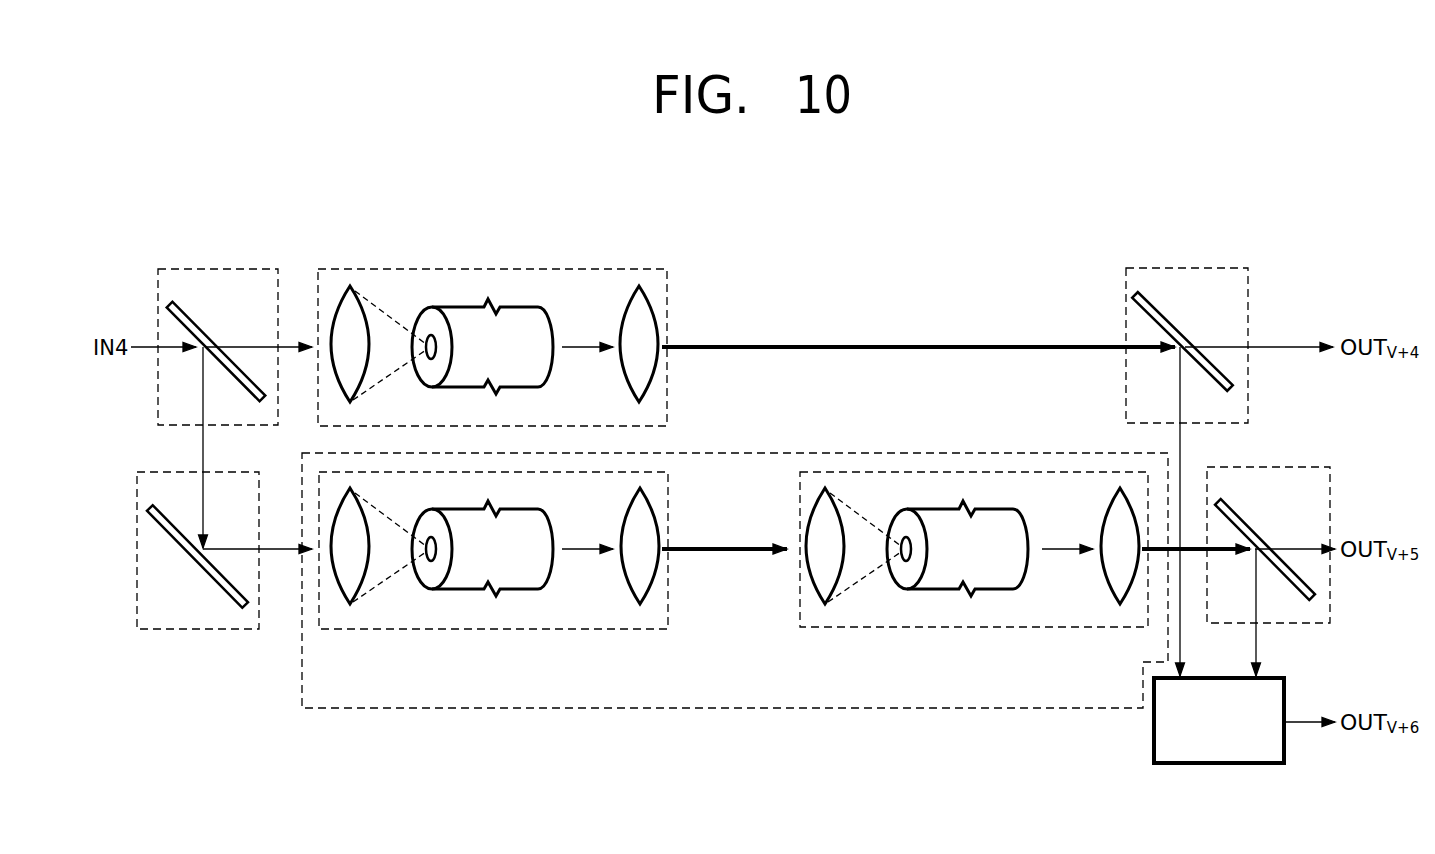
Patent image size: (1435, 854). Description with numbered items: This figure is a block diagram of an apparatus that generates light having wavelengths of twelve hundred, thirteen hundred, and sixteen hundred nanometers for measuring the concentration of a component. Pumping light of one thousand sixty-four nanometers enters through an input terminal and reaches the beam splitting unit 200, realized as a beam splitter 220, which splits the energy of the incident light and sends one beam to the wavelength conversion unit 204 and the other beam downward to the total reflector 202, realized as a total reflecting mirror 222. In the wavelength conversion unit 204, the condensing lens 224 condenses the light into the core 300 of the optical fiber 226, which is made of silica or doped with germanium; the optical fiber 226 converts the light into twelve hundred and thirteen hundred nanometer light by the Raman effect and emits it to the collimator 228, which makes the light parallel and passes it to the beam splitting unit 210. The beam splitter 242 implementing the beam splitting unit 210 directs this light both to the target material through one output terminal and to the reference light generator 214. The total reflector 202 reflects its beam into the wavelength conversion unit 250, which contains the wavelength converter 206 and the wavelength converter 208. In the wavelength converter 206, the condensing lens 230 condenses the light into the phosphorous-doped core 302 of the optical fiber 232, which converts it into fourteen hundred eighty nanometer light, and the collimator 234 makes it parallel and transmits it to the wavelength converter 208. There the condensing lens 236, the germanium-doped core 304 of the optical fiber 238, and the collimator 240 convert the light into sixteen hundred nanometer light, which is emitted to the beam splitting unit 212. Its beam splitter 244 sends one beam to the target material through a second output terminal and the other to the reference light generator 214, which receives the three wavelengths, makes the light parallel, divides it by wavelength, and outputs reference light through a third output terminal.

The beam splitting unit 200 is at (238, 268).
The beam splitter 220 is at (205, 333).
The total reflector 202 is at (198, 630).
The total reflecting mirror 222 is at (190, 563).
The wavelength conversion unit 204 is at (494, 268).
The condensing lens 224 is at (366, 305).
The core 300 is at (432, 335).
The optical fiber 226 is at (527, 318).
The collimator 228 is at (652, 310).
The beam splitting unit 210 is at (1188, 268).
The beam splitter 242 is at (1178, 326).
The beam splitting unit 212 is at (1292, 467).
The beam splitter 244 is at (1260, 530).
The reference light generator 214 is at (1215, 765).
The wavelength conversion unit 250 is at (723, 708).
The wavelength converter 206 is at (495, 630).
The condensing lens 230 is at (363, 585).
The core 302 is at (433, 560).
The optical fiber 232 is at (528, 578).
The collimator 234 is at (652, 585).
The wavelength converter 208 is at (975, 628).
The condensing lens 236 is at (835, 590).
The core 304 is at (907, 562).
The optical fiber 238 is at (1008, 578).
The collimator 240 is at (1107, 585).